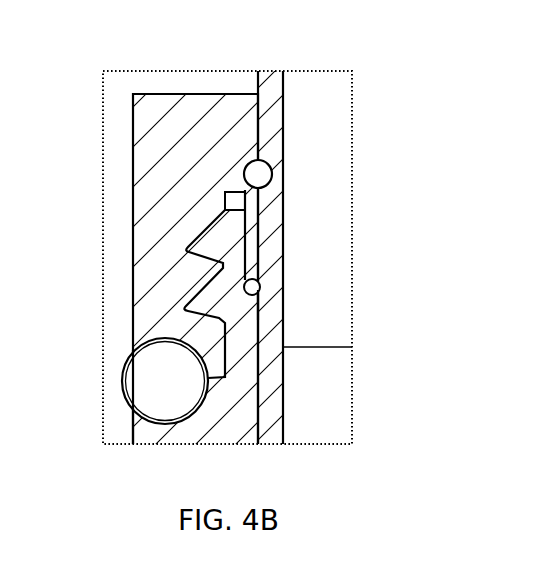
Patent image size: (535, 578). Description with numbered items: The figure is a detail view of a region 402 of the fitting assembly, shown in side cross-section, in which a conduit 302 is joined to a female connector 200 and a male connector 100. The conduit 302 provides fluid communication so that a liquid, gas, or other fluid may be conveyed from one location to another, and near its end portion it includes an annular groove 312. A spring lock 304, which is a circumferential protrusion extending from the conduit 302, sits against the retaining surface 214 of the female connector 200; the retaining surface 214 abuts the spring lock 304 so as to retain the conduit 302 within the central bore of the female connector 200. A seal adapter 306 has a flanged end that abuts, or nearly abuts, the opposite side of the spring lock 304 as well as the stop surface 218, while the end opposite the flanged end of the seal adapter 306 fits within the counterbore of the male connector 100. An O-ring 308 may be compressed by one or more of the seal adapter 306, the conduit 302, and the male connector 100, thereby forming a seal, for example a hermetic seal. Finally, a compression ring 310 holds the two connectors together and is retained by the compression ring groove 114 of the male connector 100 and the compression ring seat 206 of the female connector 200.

The male connector 100 is at (232, 432).
The compression ring groove 114 is at (133, 440).
The female connector 200 is at (140, 160).
The compression ring seat 206 is at (145, 346).
The retaining surface 214 is at (247, 152).
The stop surface 218 is at (235, 196).
The conduit 302 is at (257, 75).
The spring lock 304 is at (263, 174).
The seal adapter 306 is at (261, 287).
The O-ring 308 is at (265, 302).
The compression ring 310 is at (125, 383).
The annular groove 312 is at (262, 188).
The region 402 is at (140, 70).